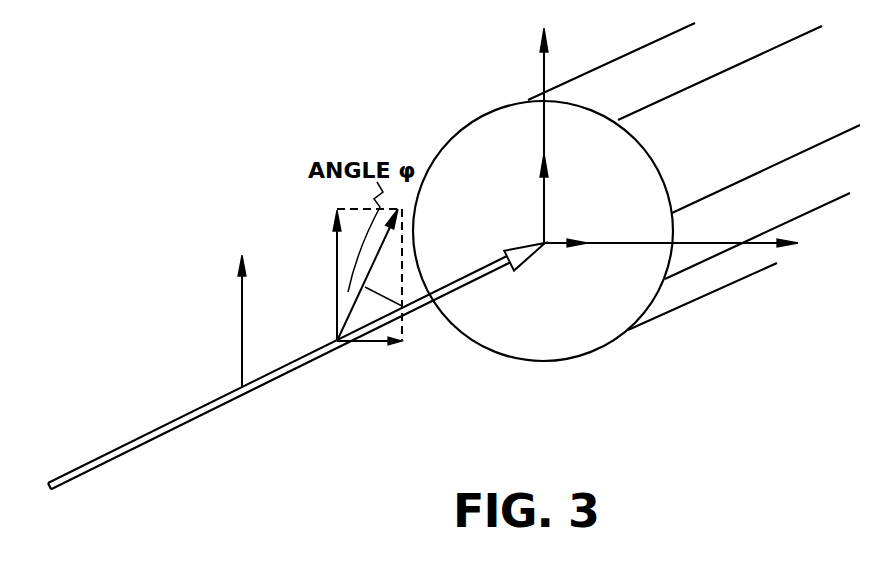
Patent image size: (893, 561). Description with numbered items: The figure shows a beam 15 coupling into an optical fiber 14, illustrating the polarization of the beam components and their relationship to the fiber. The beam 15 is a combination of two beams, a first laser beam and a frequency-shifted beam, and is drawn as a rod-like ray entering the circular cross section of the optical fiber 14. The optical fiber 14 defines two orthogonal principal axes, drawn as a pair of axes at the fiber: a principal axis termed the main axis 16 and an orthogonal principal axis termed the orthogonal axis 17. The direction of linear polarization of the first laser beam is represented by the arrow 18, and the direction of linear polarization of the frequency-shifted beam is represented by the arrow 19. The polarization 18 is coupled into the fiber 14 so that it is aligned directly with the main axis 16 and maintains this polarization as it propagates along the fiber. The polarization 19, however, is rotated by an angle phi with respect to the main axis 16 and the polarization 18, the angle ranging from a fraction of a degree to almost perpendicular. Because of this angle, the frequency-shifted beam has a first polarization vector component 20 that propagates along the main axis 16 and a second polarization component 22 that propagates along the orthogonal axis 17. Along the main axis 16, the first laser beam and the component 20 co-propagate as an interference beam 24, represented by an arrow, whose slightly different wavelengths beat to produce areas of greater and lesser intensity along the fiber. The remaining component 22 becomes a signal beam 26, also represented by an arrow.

The optical fiber 14 is at (677, 93).
The beam 15 is at (178, 418).
The main axis 16 is at (544, 68).
The orthogonal axis 17 is at (645, 246).
The arrow 18 is at (240, 321).
The arrow 19 is at (410, 316).
The first polarization vector component 20 is at (336, 266).
The second polarization component 22 is at (367, 348).
The interference beam 24 is at (544, 190).
The signal beam 26 is at (566, 248).